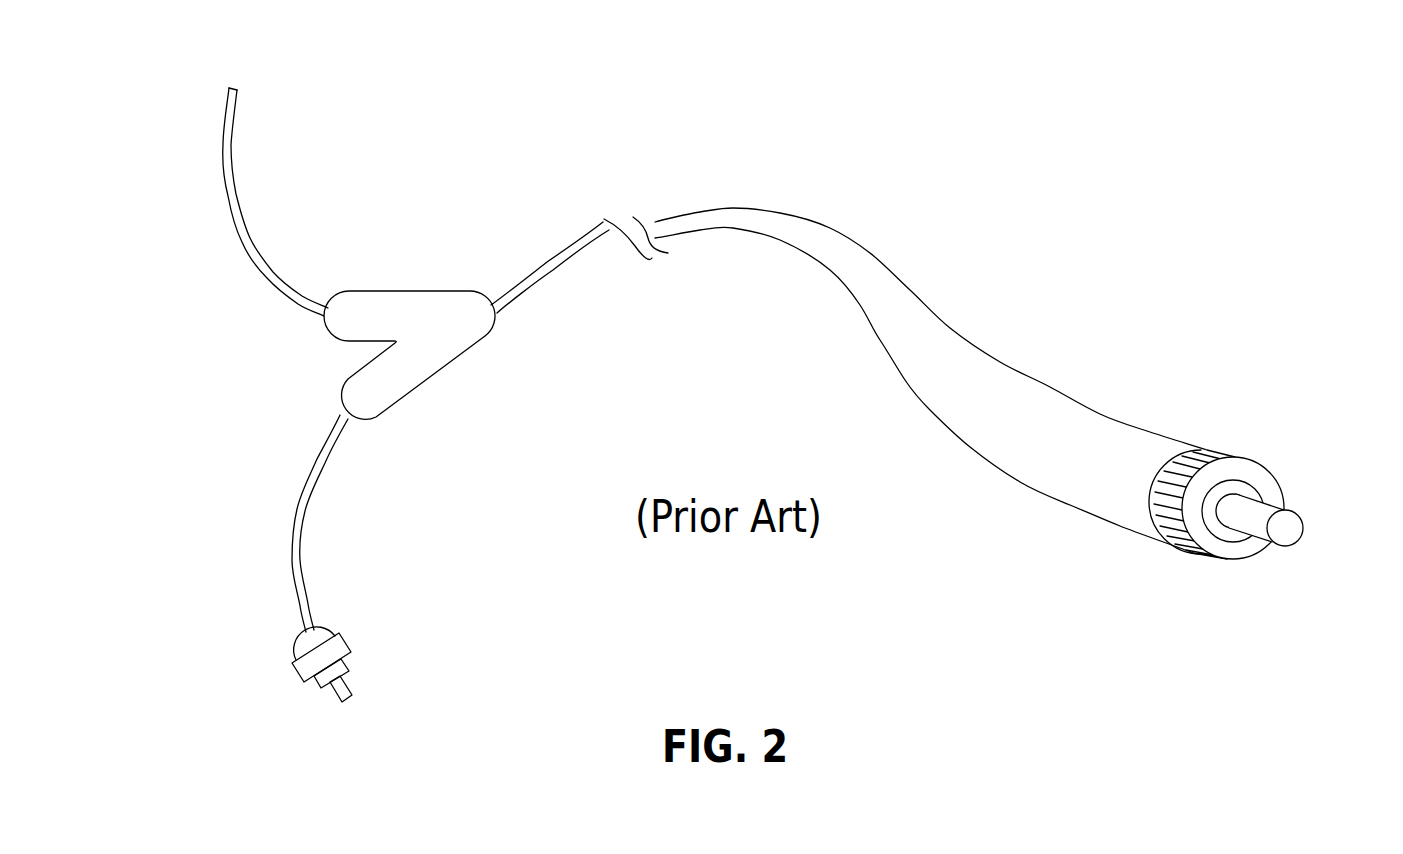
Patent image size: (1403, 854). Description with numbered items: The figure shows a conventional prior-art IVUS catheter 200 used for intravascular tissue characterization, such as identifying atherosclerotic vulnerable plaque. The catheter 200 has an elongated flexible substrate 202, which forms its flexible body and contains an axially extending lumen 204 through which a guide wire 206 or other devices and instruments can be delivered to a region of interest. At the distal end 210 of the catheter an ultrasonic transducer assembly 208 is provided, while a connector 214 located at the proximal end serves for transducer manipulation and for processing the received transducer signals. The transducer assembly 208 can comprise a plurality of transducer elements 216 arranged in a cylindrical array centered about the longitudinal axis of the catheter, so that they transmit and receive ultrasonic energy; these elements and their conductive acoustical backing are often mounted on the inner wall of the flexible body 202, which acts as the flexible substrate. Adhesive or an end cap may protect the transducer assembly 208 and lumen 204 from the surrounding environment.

The catheter 200 is at (428, 140).
The elongated flexible substrate 202 is at (832, 228).
The lumen 204 is at (1312, 540).
The guide wire 206 is at (226, 207).
The ultrasonic transducer assembly 208 is at (1158, 480).
The distal end 210 is at (1233, 552).
The connector 214 is at (344, 638).
The transducer elements 216 is at (1160, 518).